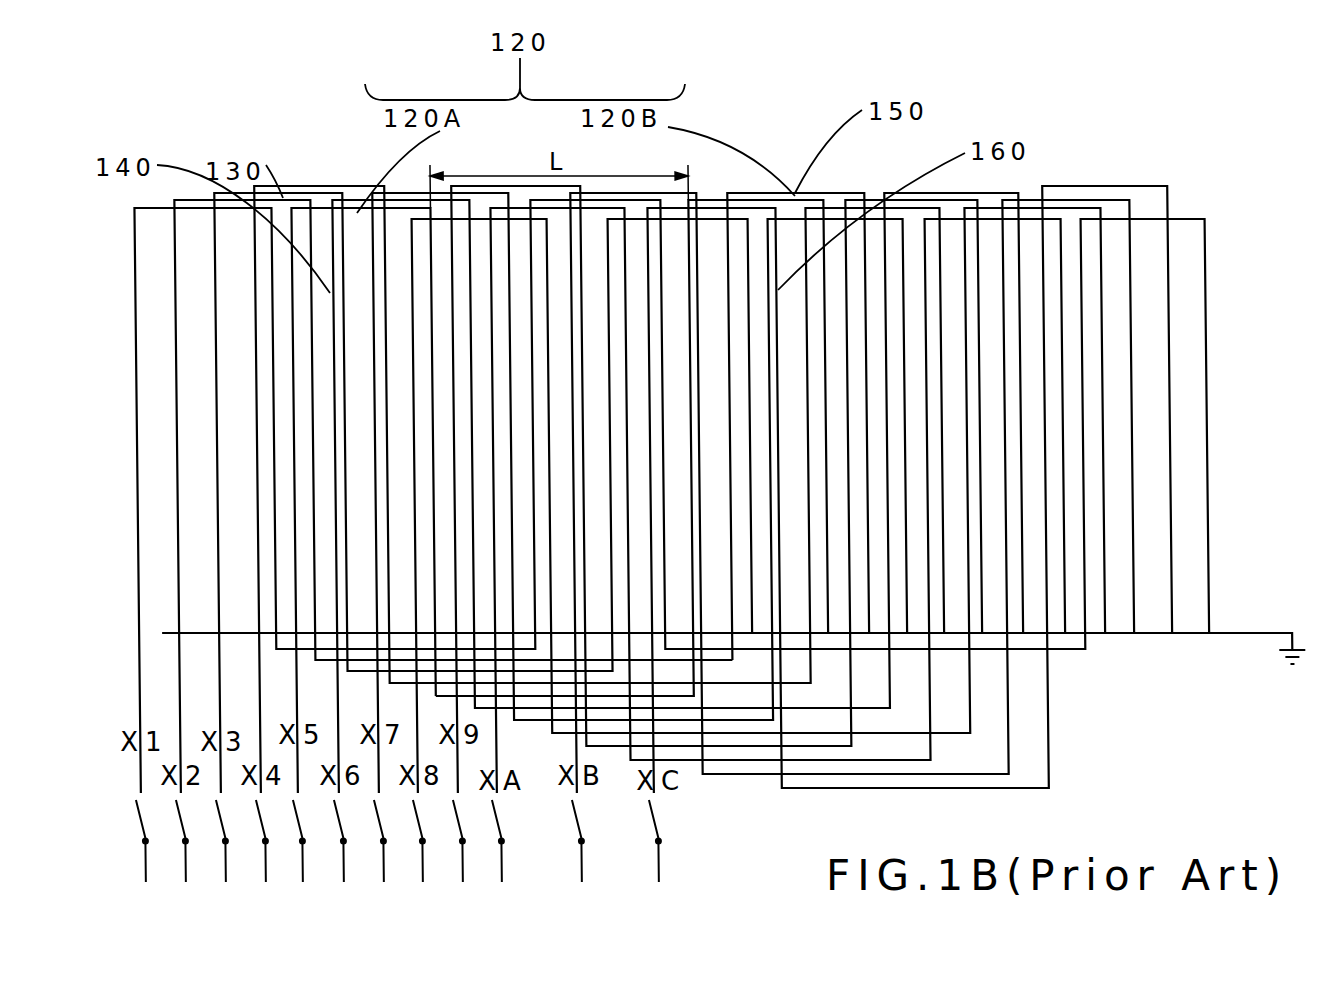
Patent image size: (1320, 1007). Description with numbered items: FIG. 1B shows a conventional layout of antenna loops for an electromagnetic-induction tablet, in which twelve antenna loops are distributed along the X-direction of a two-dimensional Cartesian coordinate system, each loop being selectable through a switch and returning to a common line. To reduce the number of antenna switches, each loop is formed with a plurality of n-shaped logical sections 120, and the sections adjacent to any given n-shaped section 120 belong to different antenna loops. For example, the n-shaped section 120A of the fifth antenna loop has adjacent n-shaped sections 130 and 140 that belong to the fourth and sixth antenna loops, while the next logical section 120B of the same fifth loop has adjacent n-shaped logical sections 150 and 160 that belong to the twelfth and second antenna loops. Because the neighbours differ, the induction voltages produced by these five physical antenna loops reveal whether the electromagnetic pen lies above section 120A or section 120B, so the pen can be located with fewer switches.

The n-shaped section 120 is at (560, 496).
The n-shaped section of antenna loop X5 120A is at (363, 500).
The n-shaped logical section of antenna loop X5 120B is at (629, 448).
The adjacent n-shaped section 130 is at (454, 496).
The adjacent n-shaped section 140 is at (678, 493).
The adjacent n-shaped logical section 150 is at (798, 426).
The adjacent n-shaped logical section 160 is at (910, 489).